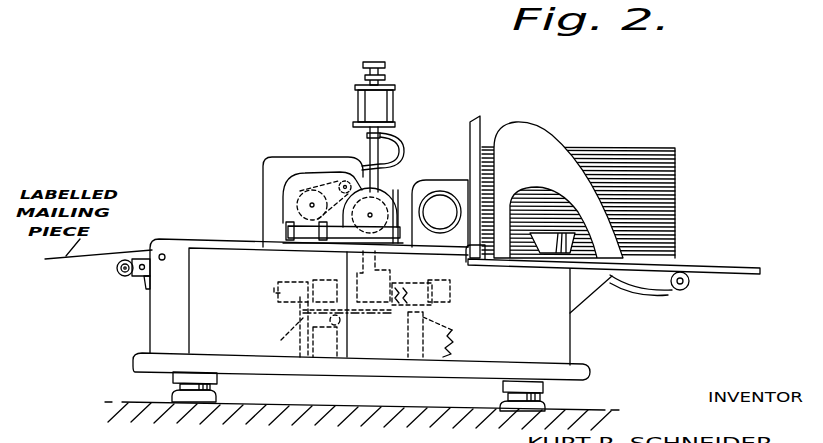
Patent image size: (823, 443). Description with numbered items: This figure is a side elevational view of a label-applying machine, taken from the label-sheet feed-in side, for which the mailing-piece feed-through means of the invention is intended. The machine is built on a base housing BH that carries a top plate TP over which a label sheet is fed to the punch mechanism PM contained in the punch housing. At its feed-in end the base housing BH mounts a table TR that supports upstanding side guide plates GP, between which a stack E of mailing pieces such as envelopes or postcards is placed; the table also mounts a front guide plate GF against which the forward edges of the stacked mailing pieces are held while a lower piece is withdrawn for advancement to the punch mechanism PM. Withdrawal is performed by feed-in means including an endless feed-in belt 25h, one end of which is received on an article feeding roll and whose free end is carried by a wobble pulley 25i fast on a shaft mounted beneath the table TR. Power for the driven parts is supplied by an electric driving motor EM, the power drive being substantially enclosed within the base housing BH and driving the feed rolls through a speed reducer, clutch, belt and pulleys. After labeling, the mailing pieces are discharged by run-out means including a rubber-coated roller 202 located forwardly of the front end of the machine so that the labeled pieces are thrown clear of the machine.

The run-out roller 202 is at (124, 278).
The top plate TP is at (222, 219).
The punch mechanism PM is at (262, 176).
The electric driving motor EM is at (393, 112).
The front guide plate GF is at (483, 121).
The side guide plate GP is at (532, 146).
The stack of mailing pieces E is at (657, 157).
The table TR is at (760, 255).
The endless feed-in belt 25h is at (637, 294).
The wobble pulley 25i is at (691, 293).
The base housing BH is at (281, 340).